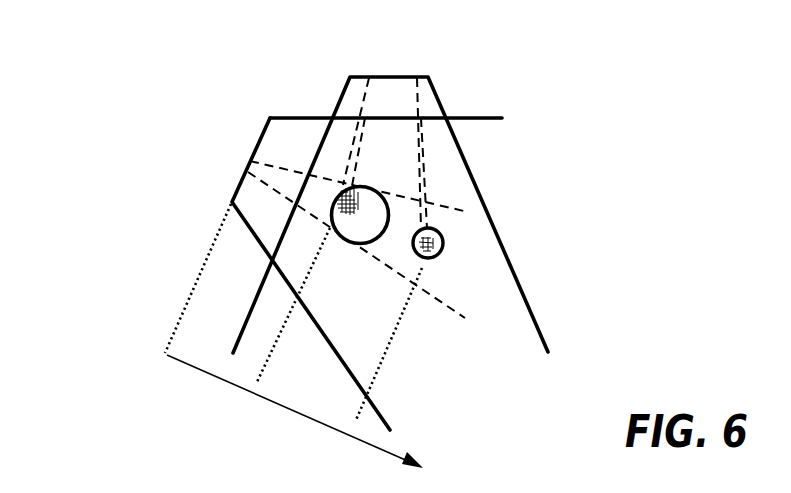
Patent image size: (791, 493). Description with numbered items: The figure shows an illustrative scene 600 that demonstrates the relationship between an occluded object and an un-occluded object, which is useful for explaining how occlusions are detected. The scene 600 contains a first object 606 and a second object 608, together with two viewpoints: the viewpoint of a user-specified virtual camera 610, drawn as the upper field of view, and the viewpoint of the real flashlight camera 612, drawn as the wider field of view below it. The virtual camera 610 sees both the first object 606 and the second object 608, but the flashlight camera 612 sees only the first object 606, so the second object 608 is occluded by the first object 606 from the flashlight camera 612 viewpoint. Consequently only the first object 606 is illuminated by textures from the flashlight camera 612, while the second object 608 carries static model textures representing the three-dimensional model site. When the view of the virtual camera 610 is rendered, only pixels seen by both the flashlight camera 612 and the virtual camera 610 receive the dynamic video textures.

The scene 600 is at (625, 78).
The object O1 606 is at (380, 223).
The object O2 608 is at (443, 235).
The virtual camera 610 is at (392, 77).
The flashlight camera 612 is at (243, 172).